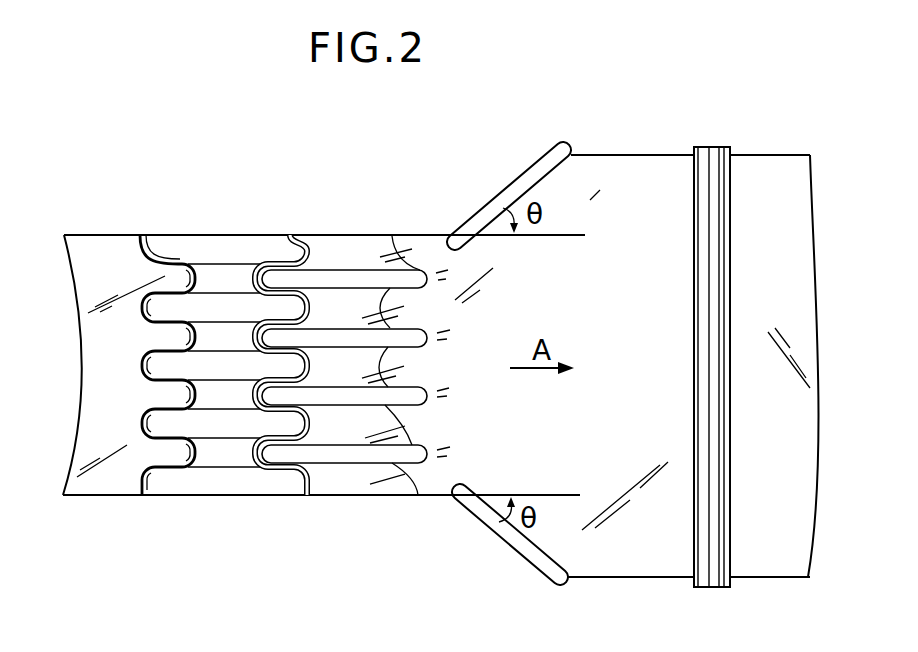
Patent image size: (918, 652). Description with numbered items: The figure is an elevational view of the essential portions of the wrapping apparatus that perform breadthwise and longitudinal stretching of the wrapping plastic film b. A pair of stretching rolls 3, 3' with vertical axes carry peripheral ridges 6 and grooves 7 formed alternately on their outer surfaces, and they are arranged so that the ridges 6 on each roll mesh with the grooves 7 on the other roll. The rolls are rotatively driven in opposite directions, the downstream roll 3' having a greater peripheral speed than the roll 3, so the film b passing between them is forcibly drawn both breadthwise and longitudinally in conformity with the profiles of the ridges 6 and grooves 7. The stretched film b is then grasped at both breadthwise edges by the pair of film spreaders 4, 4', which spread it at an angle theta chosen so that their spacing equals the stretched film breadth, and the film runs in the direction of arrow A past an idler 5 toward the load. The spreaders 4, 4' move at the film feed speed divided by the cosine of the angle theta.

The stretching roll 3 is at (182, 329).
The stretching roll 3' is at (306, 329).
The film spreader 4 is at (509, 193).
The film spreader 4' is at (510, 534).
The idler 5 is at (708, 147).
The peripheral ridge 6 is at (420, 265).
The peripheral groove 7 is at (148, 270).
The film b is at (628, 180).